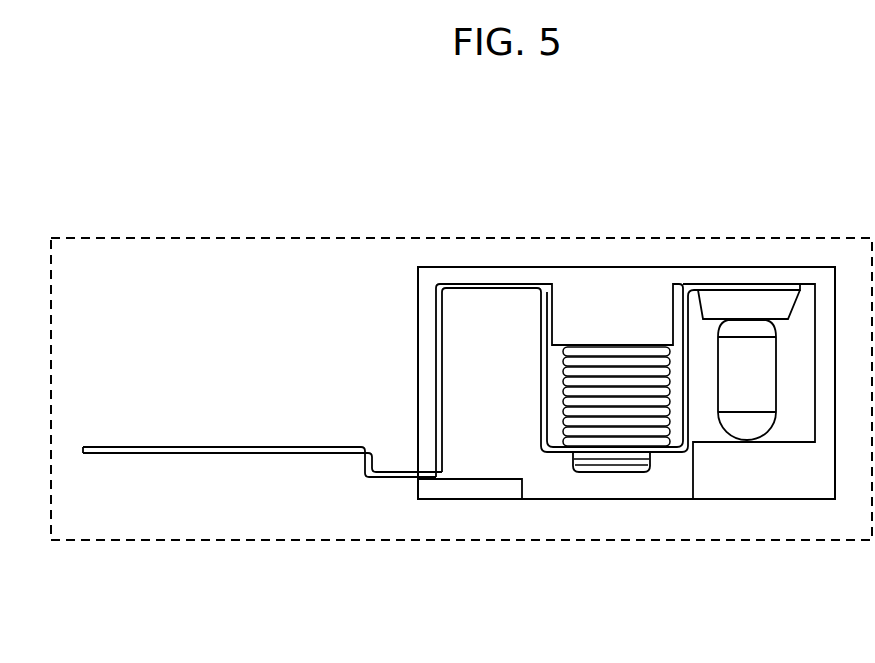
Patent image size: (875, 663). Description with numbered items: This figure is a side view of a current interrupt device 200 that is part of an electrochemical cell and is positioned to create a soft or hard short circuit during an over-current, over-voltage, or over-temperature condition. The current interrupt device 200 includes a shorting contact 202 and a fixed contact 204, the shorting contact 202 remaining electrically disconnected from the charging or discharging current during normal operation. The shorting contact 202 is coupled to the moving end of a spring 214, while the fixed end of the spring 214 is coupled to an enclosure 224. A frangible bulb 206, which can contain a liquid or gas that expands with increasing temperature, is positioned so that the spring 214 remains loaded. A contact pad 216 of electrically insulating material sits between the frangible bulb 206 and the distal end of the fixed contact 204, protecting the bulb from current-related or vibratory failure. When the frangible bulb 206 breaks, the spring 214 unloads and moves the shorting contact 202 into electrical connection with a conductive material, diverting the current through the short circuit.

The current interrupt device 200 is at (462, 190).
The shorting contact 202 is at (618, 468).
The fixed contact 204 is at (287, 455).
The frangible bulb 206 is at (752, 417).
The spring 214 is at (615, 355).
The contact pad 216 is at (740, 302).
The enclosure 224 is at (489, 480).